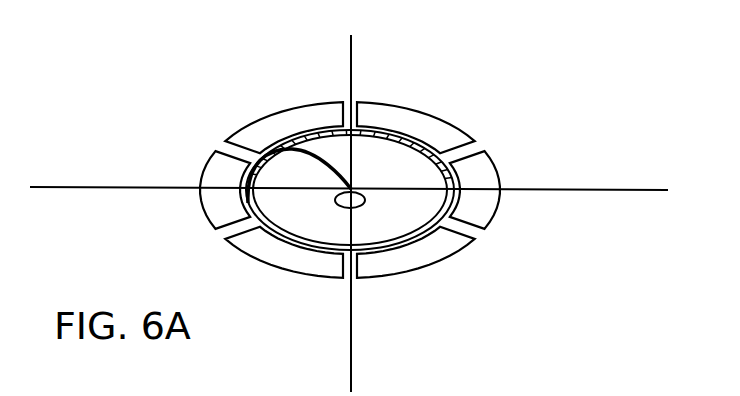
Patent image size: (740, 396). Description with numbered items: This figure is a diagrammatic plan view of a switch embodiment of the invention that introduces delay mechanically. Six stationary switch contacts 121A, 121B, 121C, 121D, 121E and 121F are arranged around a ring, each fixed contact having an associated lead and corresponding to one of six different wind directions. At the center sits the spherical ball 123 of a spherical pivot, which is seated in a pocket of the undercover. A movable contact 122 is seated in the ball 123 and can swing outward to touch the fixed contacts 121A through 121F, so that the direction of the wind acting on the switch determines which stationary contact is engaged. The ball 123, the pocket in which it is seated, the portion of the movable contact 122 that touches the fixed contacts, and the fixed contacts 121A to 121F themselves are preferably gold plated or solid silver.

The stationary switch contact 121A is at (281, 116).
The stationary switch contact 121B is at (420, 124).
The stationary switch contact 121C is at (478, 170).
The stationary switch contact 121D is at (437, 248).
The stationary switch contact 121E is at (297, 258).
The stationary switch contact 121F is at (217, 207).
The movable contact 122 is at (250, 179).
The spherical ball 123 is at (353, 203).